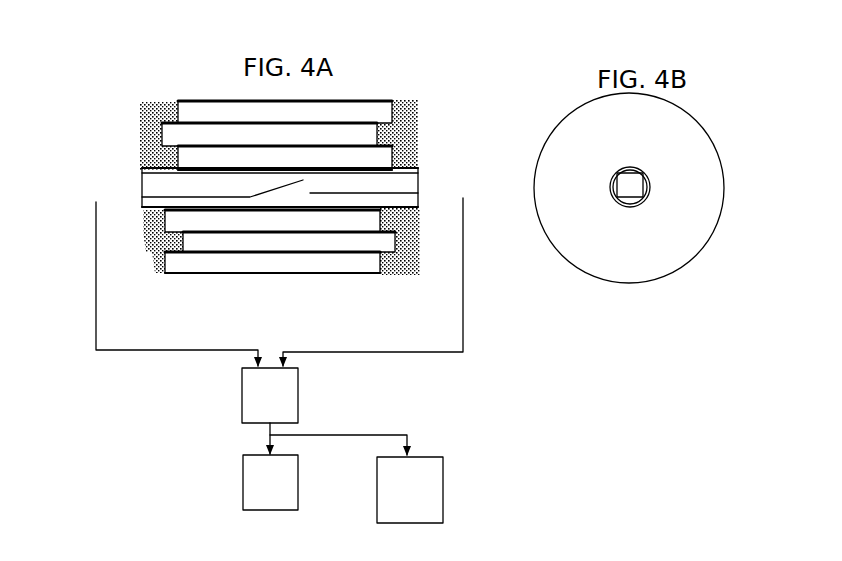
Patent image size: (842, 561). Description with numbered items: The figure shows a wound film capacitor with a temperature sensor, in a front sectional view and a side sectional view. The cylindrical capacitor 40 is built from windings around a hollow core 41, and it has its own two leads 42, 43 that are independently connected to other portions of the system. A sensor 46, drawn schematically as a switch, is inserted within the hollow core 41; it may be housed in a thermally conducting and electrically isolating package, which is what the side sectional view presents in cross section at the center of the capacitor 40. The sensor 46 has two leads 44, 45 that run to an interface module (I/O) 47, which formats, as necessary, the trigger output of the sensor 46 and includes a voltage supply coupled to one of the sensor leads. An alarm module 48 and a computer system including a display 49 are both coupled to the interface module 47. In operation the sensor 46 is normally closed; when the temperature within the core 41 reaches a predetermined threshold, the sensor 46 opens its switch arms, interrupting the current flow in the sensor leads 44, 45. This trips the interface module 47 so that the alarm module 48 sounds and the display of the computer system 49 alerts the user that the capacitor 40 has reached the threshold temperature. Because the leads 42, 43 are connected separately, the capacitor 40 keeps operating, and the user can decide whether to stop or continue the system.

In FIG. 4A, the cylindrical capacitor 40 is at (170, 87).
In FIG. 4B, the cylindrical capacitor 40 is at (713, 143).
In FIG. 4A, the hollow core 41 is at (140, 178).
In FIG. 4B, the hollow core 41 is at (627, 205).
In FIG. 4A, the lead 42 is at (140, 137).
In FIG. 4A, the lead 43 is at (418, 133).
In FIG. 4A, the sensor lead 44 is at (142, 198).
In FIG. 4A, the sensor lead 45 is at (418, 194).
In FIG. 4A, the sensor 46 is at (288, 199).
In FIG. 4B, the sensor 46 is at (632, 183).
In FIG. 4A, the interface module (I/O) 47 is at (242, 408).
In FIG. 4A, the alarm module 48 is at (243, 487).
In FIG. 4A, the computer system including a display 49 is at (442, 457).